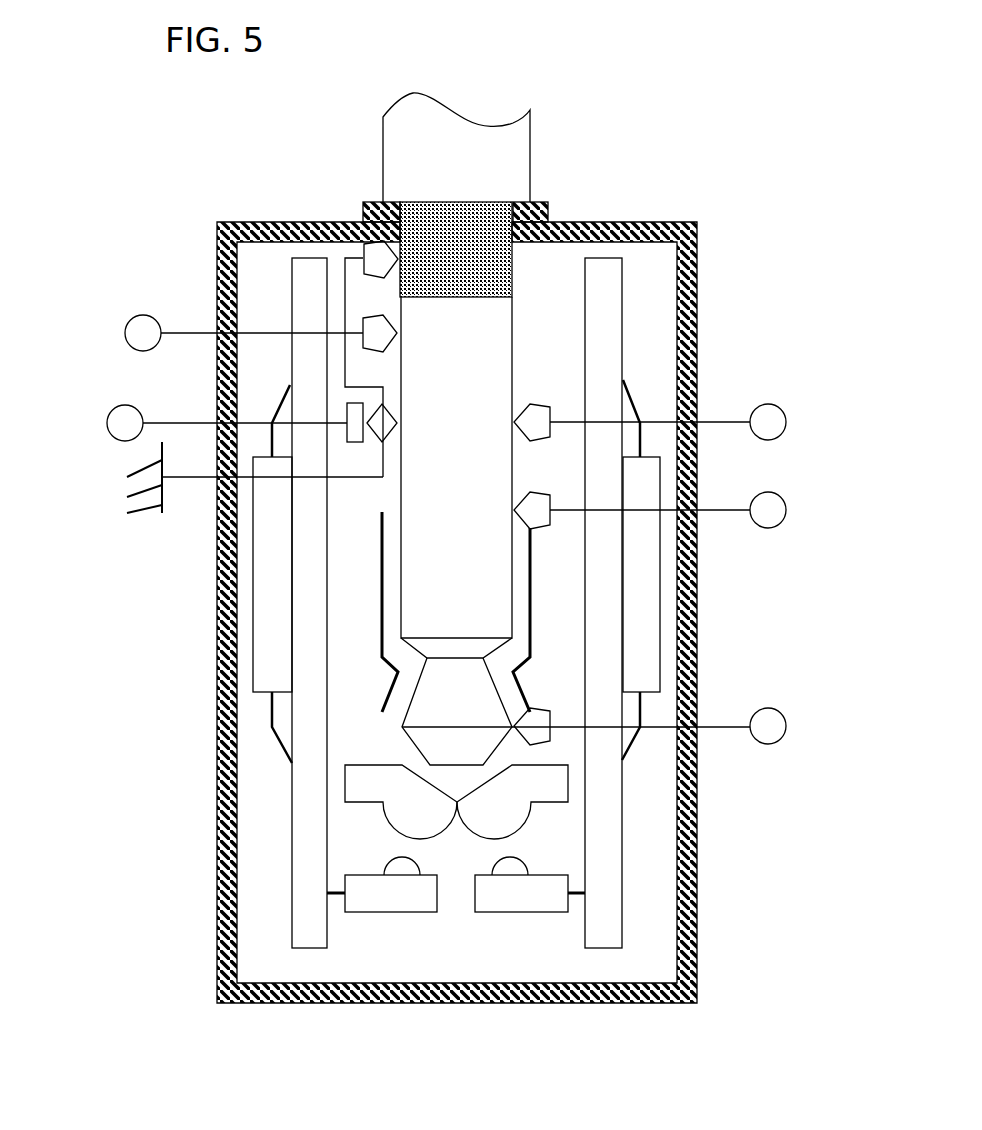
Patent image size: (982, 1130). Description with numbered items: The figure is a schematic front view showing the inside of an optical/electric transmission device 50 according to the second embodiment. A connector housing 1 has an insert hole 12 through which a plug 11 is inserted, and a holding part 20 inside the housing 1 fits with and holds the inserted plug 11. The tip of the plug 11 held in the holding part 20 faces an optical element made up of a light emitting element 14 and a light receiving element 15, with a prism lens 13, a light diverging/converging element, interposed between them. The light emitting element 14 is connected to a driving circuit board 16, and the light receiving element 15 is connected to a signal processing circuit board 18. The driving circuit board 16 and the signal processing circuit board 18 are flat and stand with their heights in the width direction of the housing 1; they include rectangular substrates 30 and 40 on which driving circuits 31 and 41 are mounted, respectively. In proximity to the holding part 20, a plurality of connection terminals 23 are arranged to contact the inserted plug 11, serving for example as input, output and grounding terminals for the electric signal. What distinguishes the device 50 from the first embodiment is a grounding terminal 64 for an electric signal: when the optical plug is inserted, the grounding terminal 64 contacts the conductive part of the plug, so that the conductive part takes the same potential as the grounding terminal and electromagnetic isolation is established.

The optical/electric transmission device 50 is at (779, 103).
The connector housing 1 is at (697, 228).
The plug 11 is at (500, 162).
The insert hole 12 is at (530, 197).
The holding part 20 is at (382, 622).
The connection terminals 23 is at (75, 305).
The grounding terminal 64 is at (208, 499).
The rectangular substrate 30 is at (300, 900).
The rectangular substrate 40 is at (610, 902).
The driving circuit 31 is at (272, 550).
The driving circuit 41 is at (640, 545).
The driving circuit board 16 is at (288, 815).
The signal processing circuit board 18 is at (632, 787).
The prism lens 13 is at (493, 802).
The light emitting element 14 is at (400, 893).
The light receiving element 15 is at (512, 893).